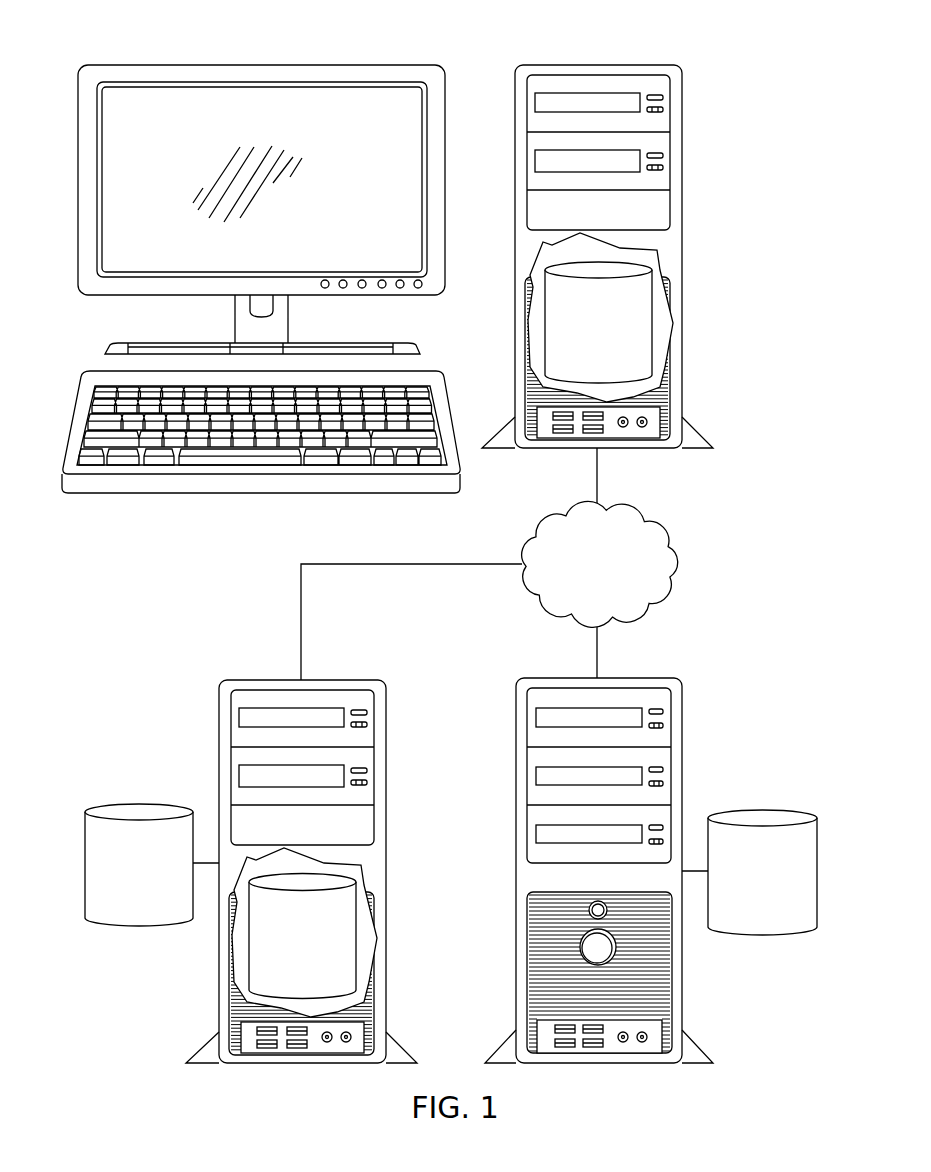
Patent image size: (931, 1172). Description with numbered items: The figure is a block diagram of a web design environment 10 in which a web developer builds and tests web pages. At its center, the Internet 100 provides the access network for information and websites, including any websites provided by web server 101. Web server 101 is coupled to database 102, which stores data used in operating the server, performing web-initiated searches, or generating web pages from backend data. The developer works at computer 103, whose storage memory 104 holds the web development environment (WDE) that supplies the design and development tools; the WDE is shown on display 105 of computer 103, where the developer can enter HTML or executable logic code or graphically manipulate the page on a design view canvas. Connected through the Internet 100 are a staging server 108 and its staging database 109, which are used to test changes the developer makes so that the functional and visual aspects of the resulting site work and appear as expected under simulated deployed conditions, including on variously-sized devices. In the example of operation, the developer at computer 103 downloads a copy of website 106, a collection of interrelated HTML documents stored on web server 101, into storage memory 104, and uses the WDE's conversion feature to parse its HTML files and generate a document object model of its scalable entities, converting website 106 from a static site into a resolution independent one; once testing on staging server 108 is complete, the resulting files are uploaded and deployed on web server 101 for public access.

The web design environment 10 is at (774, 207).
The Internet 100 is at (581, 593).
The web server 101 is at (286, 871).
The database 102 is at (123, 898).
The computer 103 is at (597, 232).
The storage memory 104 is at (583, 358).
The display 105 is at (206, 64).
The website 106 is at (304, 932).
The staging server 108 is at (682, 975).
The staging database 109 is at (746, 915).